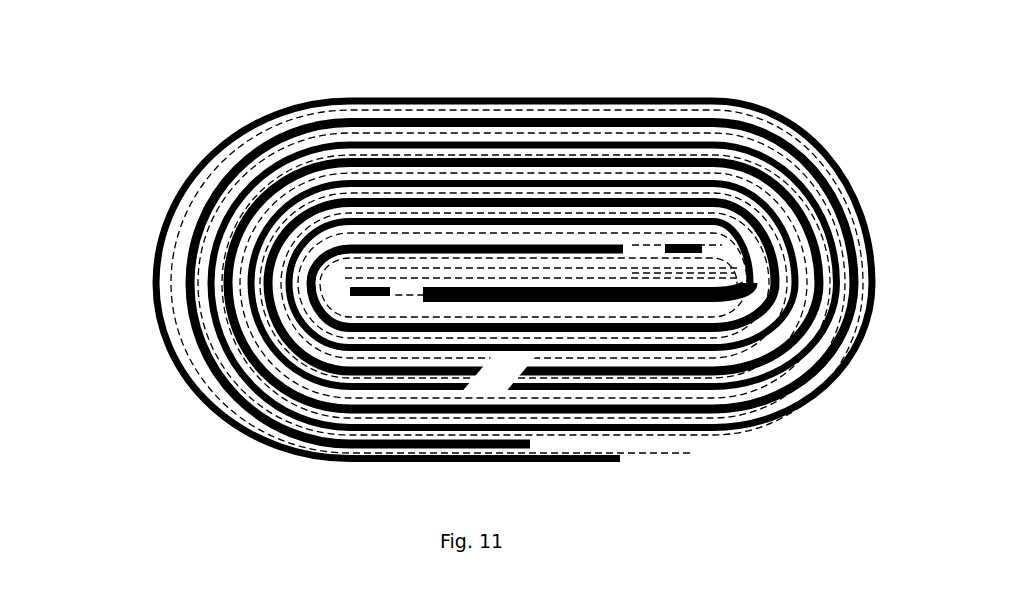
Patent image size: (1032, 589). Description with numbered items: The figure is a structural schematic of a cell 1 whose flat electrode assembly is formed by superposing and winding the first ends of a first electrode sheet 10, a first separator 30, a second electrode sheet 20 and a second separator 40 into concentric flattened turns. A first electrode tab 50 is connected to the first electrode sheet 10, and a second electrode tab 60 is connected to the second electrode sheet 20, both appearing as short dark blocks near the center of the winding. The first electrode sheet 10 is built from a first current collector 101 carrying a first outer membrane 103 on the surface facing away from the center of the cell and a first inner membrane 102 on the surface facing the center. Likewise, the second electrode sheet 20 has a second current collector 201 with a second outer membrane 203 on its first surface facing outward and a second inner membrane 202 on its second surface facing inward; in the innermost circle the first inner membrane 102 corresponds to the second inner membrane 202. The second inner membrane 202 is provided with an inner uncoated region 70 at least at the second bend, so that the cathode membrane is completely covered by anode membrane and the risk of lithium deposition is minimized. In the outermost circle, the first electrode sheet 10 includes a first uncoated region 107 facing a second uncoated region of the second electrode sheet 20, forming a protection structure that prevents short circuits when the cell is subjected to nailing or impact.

The cell 1 is at (469, 249).
The first electrode sheet 10 is at (541, 209).
The first current collector 101 is at (512, 243).
The first inner membrane 102 is at (535, 243).
The first outer membrane 103 is at (488, 243).
The second electrode sheet 20 is at (627, 378).
The second current collector 201 is at (520, 288).
The second inner membrane 202 is at (552, 295).
The second outer membrane 203 is at (498, 298).
The first separator 30 is at (423, 236).
The second separator 40 is at (405, 260).
The first electrode tab 50 is at (705, 250).
The second electrode tab 60 is at (362, 296).
The inner uncoated region 70 is at (757, 262).
The first uncoated region 107 is at (188, 252).